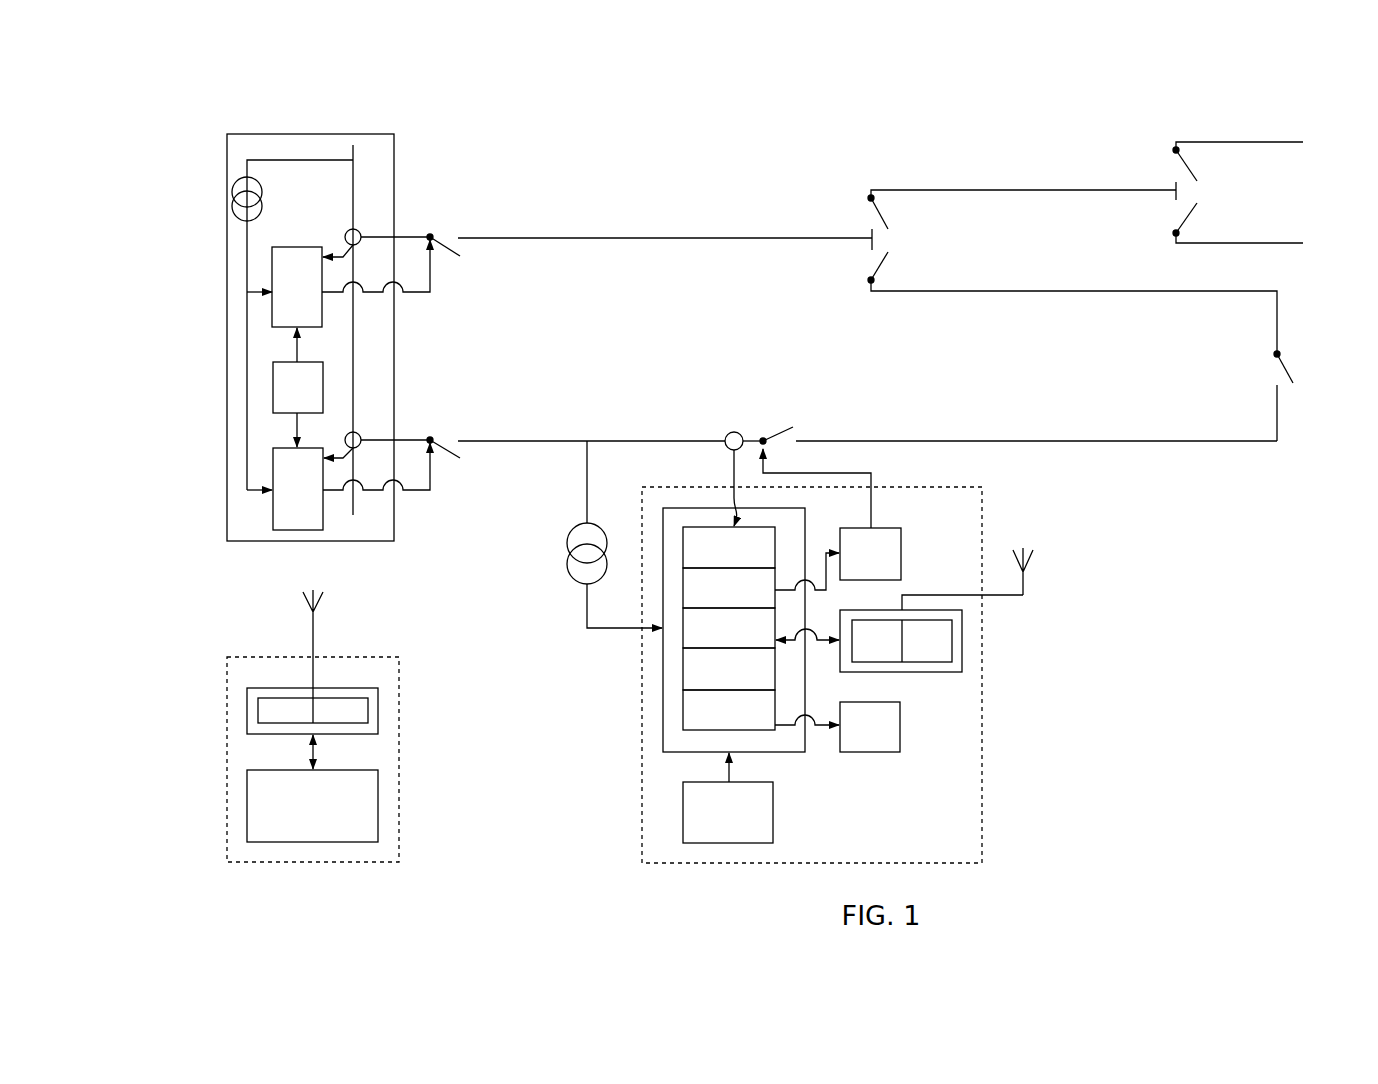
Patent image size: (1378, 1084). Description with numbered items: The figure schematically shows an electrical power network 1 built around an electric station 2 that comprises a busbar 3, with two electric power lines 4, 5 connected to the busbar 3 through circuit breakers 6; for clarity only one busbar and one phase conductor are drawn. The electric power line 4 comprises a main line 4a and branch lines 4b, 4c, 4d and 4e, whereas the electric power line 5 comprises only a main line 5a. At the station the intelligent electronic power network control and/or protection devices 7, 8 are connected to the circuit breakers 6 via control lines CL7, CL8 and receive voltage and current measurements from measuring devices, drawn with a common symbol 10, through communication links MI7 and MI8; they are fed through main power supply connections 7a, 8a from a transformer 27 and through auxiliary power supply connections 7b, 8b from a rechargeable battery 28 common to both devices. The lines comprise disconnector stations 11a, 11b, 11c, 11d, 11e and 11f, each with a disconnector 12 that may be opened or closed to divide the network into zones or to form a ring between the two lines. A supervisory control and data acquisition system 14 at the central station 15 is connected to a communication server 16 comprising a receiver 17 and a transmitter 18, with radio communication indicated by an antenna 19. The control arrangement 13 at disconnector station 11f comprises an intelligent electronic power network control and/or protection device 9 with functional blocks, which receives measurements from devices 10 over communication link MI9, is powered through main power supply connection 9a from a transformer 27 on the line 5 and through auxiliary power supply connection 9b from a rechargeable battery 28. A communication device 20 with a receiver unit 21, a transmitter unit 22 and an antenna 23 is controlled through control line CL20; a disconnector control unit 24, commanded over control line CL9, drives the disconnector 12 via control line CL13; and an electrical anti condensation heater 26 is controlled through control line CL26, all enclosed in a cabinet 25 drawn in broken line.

The electrical power network 1 is at (556, 149).
The electric station 2 is at (275, 148).
The busbar 3 is at (355, 366).
The electric power line 4 is at (701, 187).
The main line 4a is at (571, 237).
The branch line 4b is at (992, 290).
The branch line 4c is at (931, 189).
The branch line 4d is at (1283, 242).
The branch line 4e is at (1208, 141).
The electric power line 5 is at (683, 389).
The main line 5a is at (547, 440).
The circuit breaker 6 is at (450, 231).
The intelligent electronic power network control and/or protection device 7 is at (284, 287).
The main power supply connection 7a is at (266, 299).
The auxiliary power supply connection 7b is at (286, 341).
The intelligent electronic power network control and/or protection device 8 is at (285, 489).
The main power supply connection 8a is at (262, 503).
The auxiliary power supply connection 8b is at (284, 438).
The intelligent electronic power network control and/or protection device 9 is at (780, 738).
The main power supply connection 9a is at (654, 641).
The auxiliary power supply connection 9b is at (714, 764).
The voltage and current measuring devices 10 is at (358, 232).
The disconnector station 11a is at (866, 263).
The disconnector station 11b is at (898, 210).
The disconnector station 11c is at (1171, 167).
The disconnector station 11d is at (1171, 215).
The disconnector station 11e is at (1272, 373).
The disconnector station 11f is at (778, 417).
The disconnector 12 is at (872, 212).
The control arrangement 13 is at (1003, 489).
The supervisory control and data acquisition system 14 is at (312, 806).
The central station 15 is at (400, 813).
The communication server 16 is at (372, 712).
The receiver 17 is at (282, 708).
The transmitter 18 is at (350, 705).
The antenna 19 is at (314, 627).
The communication device 20 is at (957, 668).
The receiver unit 21 is at (888, 653).
The transmitter unit 22 is at (939, 633).
The antenna 23 is at (1024, 582).
The disconnector control unit 24 is at (870, 554).
The cabinet 25 is at (983, 778).
The electrical anti condensation heater 26 is at (870, 727).
The transformer 27 is at (241, 200).
The rechargeable battery 28 is at (523, 585).
The communication link MI7 is at (345, 252).
The communication link MI8 is at (338, 492).
The communication link MI9 is at (733, 478).
The control line CL7 is at (432, 285).
The control line CL8 is at (412, 492).
The control line CL9 is at (826, 553).
The control line CL13 is at (855, 473).
The control line CL20 is at (817, 645).
The control line CL26 is at (823, 732).